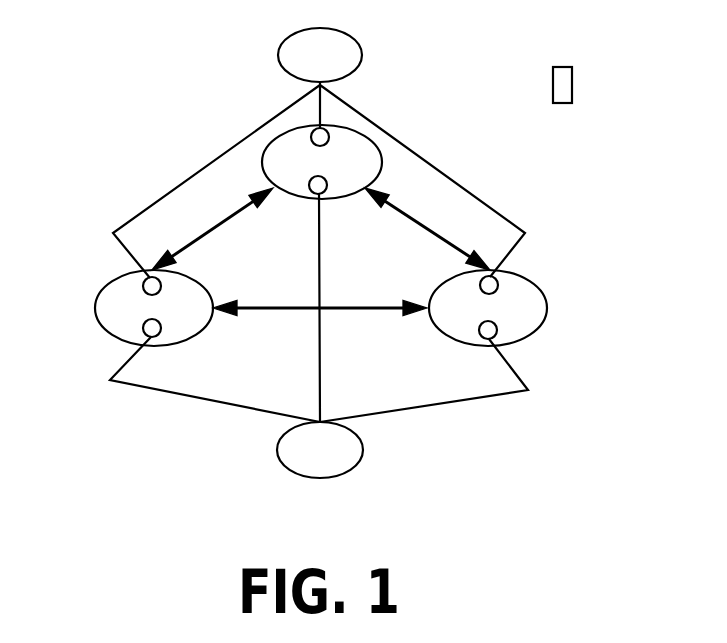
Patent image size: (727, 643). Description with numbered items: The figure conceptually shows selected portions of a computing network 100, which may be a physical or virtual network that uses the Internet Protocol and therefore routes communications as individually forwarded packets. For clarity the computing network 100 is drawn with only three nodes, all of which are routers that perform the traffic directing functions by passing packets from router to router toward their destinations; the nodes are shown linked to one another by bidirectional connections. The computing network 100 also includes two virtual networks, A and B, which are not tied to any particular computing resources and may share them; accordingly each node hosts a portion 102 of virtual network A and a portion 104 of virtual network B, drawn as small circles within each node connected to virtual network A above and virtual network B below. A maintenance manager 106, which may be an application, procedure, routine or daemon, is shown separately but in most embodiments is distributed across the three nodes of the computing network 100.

The computing network 100 is at (152, 65).
The portion of virtual network A 102 is at (327, 128).
The portion of virtual network B 104 is at (313, 197).
The maintenance manager 106 is at (575, 63).